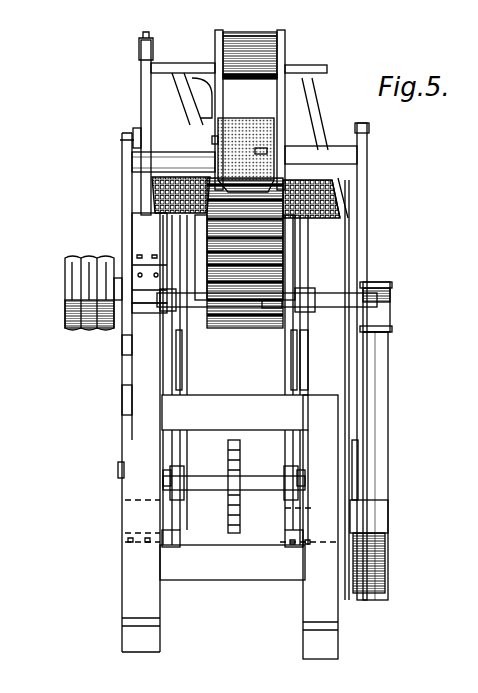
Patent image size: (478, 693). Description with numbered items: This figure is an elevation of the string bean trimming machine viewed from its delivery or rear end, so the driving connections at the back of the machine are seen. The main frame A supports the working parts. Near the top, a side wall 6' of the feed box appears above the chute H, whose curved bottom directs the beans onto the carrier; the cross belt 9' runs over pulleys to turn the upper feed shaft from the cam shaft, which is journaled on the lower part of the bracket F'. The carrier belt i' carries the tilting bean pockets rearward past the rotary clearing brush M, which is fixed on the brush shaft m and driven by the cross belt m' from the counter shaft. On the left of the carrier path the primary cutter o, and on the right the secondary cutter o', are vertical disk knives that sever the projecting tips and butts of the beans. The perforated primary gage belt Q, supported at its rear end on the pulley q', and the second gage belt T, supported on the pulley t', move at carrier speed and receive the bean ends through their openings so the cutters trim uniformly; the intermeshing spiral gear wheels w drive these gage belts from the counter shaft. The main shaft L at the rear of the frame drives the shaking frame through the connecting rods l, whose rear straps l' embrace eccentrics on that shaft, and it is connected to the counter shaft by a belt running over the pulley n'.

The main frame A is at (219, 396).
The cross belt 9' is at (163, 89).
The side wall of feed box 6' is at (236, 48).
The chute H is at (249, 110).
The bracket F' is at (195, 104).
The secondary cutter o' is at (202, 142).
The rotary clearing brush M is at (258, 137).
The primary cutter o is at (277, 144).
The brush shaft m is at (334, 339).
The second gage belt T is at (152, 196).
The primary gage belt Q is at (343, 197).
The pulley q' is at (358, 210).
The pulley t' is at (149, 258).
The connecting rod l is at (244, 265).
The strap l' is at (272, 324).
The carrier belt i' is at (267, 322).
The main shaft L is at (392, 306).
The cross belt m' is at (384, 466).
The pulley n' is at (379, 546).
The spiral gear wheel w is at (163, 476).